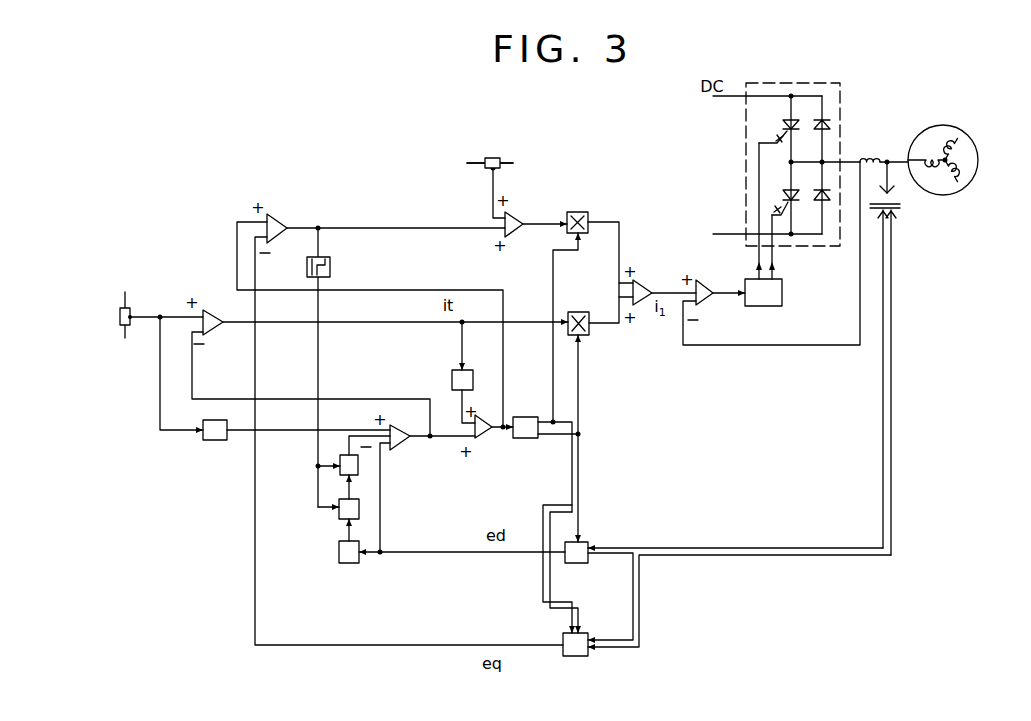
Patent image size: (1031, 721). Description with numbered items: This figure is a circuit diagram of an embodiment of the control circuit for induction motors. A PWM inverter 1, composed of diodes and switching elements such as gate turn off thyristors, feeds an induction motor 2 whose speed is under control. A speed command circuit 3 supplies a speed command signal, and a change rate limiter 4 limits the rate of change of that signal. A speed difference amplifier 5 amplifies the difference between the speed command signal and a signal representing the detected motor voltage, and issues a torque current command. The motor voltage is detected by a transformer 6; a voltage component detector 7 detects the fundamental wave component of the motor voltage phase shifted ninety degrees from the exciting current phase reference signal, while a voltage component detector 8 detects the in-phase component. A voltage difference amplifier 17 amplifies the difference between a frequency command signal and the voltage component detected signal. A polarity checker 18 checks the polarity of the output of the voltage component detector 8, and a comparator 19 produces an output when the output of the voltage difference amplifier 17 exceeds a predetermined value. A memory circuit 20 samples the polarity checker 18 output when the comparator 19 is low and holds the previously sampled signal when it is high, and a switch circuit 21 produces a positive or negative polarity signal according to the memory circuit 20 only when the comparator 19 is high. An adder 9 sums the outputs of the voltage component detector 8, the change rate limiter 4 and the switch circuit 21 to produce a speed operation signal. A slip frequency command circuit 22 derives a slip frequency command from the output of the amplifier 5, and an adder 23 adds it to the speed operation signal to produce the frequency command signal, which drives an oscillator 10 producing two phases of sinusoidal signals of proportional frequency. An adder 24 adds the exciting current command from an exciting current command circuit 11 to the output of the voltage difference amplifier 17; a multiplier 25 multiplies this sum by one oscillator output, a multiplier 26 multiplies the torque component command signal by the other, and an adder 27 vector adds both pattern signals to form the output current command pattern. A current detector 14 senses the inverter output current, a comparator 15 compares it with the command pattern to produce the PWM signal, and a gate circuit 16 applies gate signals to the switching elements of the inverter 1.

The PWM inverter 1 is at (844, 100).
The induction motor 2 is at (974, 151).
The speed command circuit 3 is at (120, 318).
The change rate limiter 4 is at (215, 441).
The speed difference amplifier 5 is at (210, 309).
The transformer 6 is at (900, 210).
The voltage component detector 7 is at (578, 657).
The voltage component detector 8 is at (588, 554).
The adder 9 is at (404, 444).
The oscillator 10 is at (525, 439).
The exciting current command circuit 11 is at (493, 158).
The current detector 14 is at (872, 157).
The comparator 15 is at (700, 280).
The gate circuit 16 is at (783, 296).
The voltage difference amplifier 17 is at (277, 216).
The polarity checker 18 is at (349, 564).
The comparator 19 is at (330, 266).
The memory circuit 20 is at (338, 518).
The switch circuit 21 is at (345, 455).
The slip frequency command circuit 22 is at (451, 372).
The adder 23 is at (487, 441).
The adder 24 is at (515, 216).
The multiplier 25 is at (588, 215).
The multiplier 26 is at (578, 312).
The adder 27 is at (640, 282).